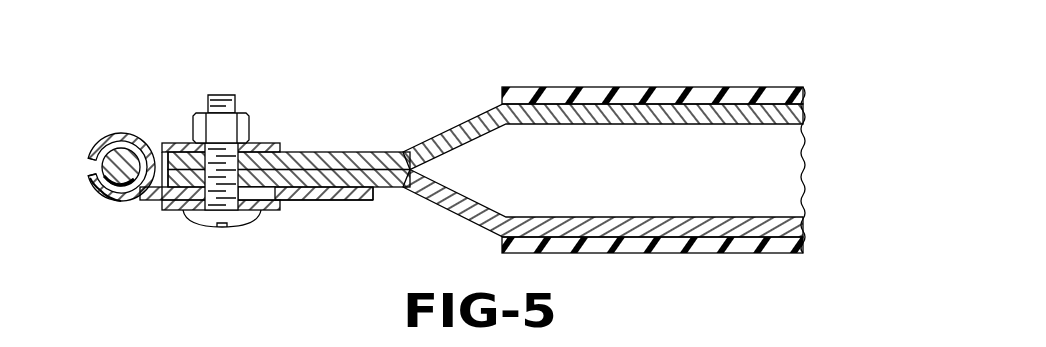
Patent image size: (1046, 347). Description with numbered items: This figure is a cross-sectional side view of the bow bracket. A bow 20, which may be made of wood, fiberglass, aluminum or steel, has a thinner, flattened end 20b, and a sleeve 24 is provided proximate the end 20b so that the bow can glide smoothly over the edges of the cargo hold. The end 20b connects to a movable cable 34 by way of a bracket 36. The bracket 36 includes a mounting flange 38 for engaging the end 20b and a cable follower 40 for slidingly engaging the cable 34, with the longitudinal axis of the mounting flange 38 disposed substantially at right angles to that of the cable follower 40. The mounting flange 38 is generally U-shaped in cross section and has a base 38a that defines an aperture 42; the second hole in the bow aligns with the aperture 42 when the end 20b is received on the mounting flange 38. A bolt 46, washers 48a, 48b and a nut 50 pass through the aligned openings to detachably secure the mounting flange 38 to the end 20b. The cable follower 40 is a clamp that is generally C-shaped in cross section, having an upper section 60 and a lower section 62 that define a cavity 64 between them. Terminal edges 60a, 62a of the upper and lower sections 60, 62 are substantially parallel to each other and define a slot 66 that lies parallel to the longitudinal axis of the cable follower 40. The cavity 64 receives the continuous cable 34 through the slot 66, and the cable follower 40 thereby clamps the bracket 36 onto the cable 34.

The bow 20 is at (456, 118).
The flattened end 20b is at (338, 152).
The sleeve 24 is at (650, 87).
The cable 34 is at (147, 152).
The bracket 36 is at (339, 212).
The mounting flange 38 is at (303, 210).
The base 38a is at (362, 205).
The cable follower 40 is at (129, 119).
The aperture 42 is at (260, 197).
The bolt 46 is at (210, 230).
The washer 48a is at (265, 144).
The washer 48b is at (168, 209).
The nut 50 is at (222, 120).
The upper section 60 is at (130, 163).
The terminal edge 60a is at (90, 165).
The lower section 62 is at (102, 190).
The terminal edge 62a is at (92, 176).
The cavity 64 is at (114, 182).
The slot 66 is at (92, 168).